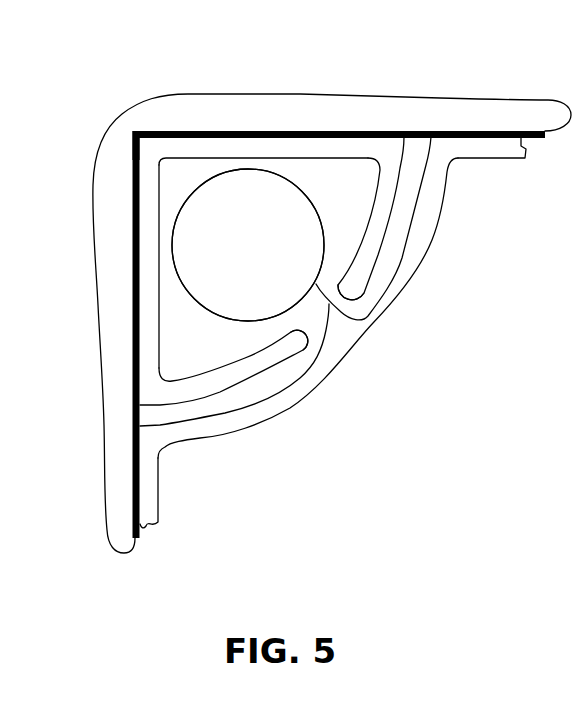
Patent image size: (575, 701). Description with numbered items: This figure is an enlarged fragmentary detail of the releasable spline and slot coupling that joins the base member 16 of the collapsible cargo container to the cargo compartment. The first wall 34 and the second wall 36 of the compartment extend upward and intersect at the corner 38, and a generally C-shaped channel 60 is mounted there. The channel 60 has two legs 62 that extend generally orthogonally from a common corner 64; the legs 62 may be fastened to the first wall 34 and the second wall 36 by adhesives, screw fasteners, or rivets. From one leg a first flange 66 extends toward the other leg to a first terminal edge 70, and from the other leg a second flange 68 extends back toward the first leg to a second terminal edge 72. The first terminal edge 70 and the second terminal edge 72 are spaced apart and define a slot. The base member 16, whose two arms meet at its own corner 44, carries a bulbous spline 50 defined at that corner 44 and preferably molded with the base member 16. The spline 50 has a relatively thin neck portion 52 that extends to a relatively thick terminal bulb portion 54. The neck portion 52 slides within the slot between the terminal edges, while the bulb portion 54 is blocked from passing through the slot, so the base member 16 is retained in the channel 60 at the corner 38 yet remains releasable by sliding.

The base member 16 is at (210, 436).
The first wall 34 is at (137, 541).
The second wall 36 is at (547, 138).
The corner 38 is at (122, 124).
The corner 44 is at (416, 407).
The bulbous spline 50 is at (334, 209).
The neck portion 52 is at (328, 325).
The terminal bulb portion 54 is at (297, 205).
The channel 60 is at (279, 124).
The legs 62 is at (182, 153).
The corner 64 is at (156, 156).
The first flange 66 is at (233, 376).
The second flange 68 is at (380, 229).
The first terminal edge 70 is at (294, 340).
The second terminal edge 72 is at (343, 291).